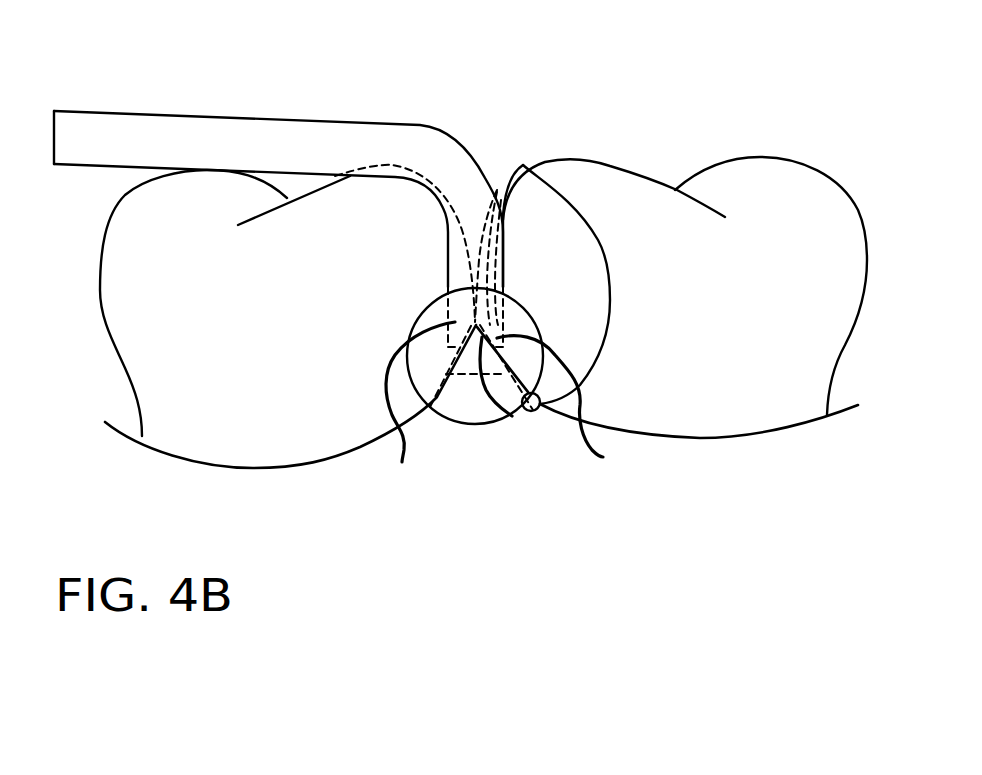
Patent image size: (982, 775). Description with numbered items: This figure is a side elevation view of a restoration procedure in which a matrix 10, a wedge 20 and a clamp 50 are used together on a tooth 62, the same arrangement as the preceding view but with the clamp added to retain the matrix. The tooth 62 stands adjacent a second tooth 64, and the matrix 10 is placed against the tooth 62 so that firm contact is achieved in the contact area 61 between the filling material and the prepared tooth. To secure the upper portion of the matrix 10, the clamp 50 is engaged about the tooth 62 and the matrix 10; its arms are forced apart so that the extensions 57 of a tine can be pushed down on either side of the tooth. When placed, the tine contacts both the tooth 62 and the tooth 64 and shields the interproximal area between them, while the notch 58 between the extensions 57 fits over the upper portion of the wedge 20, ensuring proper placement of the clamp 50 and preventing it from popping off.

The matrix 10 is at (553, 243).
The wedge 20 is at (472, 408).
The clamp 50 is at (272, 142).
The extensions 57 is at (502, 408).
The notch 58 is at (512, 416).
The contact area 61 is at (473, 220).
The tooth 62 is at (812, 205).
The second tooth 64 is at (146, 308).